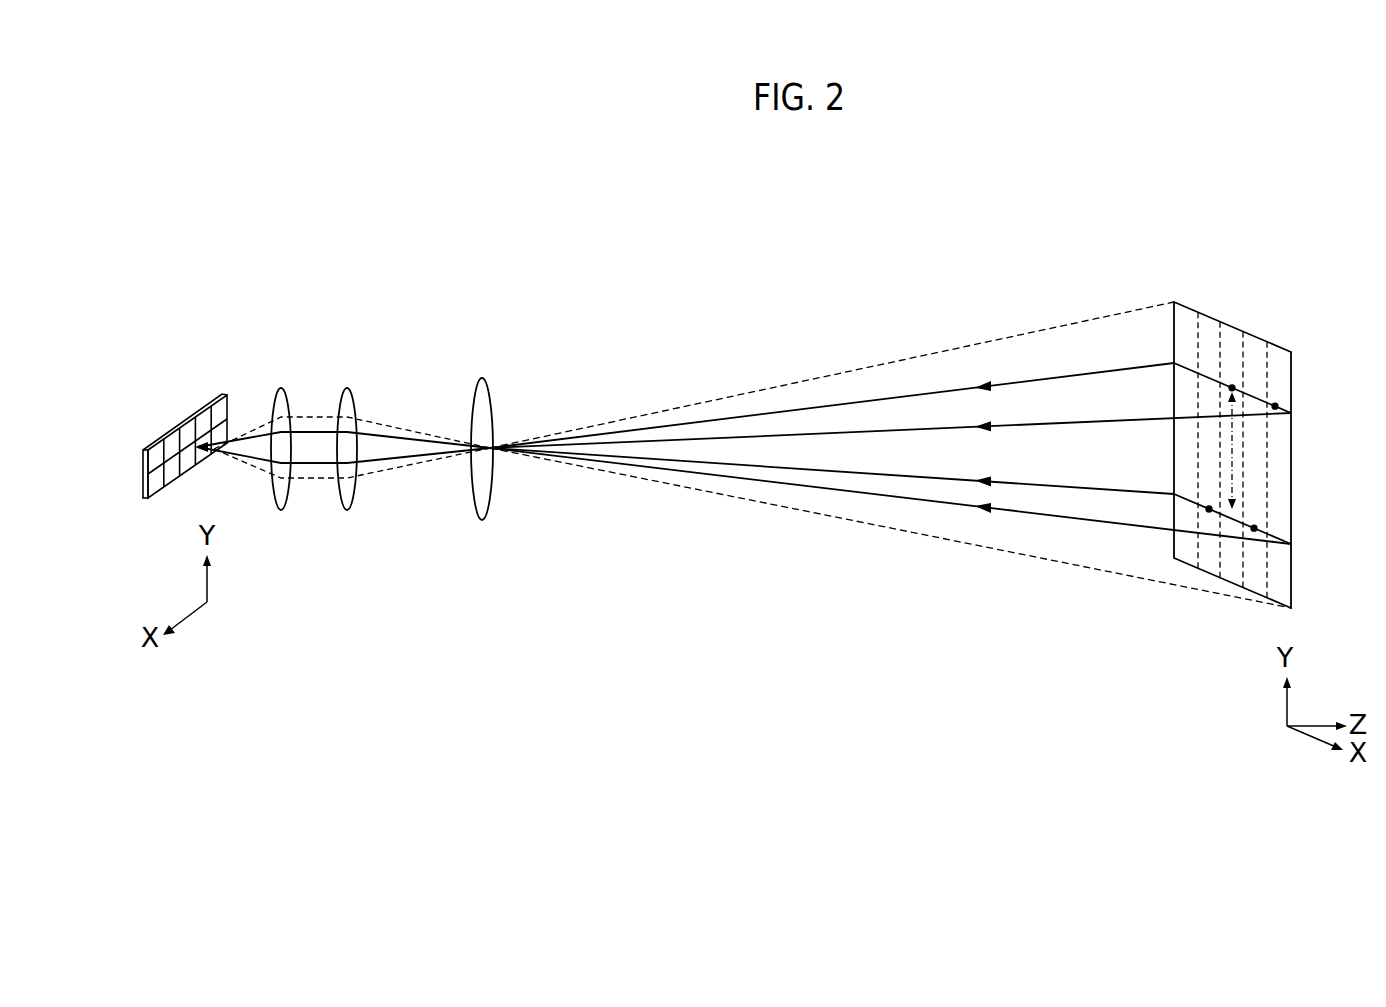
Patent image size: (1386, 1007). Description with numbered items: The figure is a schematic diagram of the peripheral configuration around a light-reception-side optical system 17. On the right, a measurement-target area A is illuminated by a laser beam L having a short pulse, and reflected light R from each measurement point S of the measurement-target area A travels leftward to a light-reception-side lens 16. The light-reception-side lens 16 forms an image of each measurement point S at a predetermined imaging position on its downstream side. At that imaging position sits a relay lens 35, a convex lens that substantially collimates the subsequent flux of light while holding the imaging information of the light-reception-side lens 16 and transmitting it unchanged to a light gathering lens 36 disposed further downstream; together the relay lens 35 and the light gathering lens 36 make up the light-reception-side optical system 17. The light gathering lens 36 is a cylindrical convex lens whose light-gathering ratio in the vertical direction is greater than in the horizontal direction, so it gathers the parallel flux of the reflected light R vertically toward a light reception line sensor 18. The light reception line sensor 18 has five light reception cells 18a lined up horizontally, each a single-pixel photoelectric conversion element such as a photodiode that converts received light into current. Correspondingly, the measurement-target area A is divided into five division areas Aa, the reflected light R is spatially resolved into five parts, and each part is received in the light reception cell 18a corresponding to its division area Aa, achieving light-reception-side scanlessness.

The light-reception-side lens 16 is at (482, 378).
The light-reception-side optical system 17 is at (367, 330).
The light reception line sensor 18 is at (144, 424).
The light reception cells 18a is at (156, 436).
The relay lens 35 is at (347, 388).
The light gathering lens 36 is at (281, 388).
The reflected light R is at (866, 401).
The measurement-target area A is at (1257, 337).
The laser beam L is at (1209, 377).
The measurement point S is at (1236, 388).
The division areas Aa is at (1185, 558).